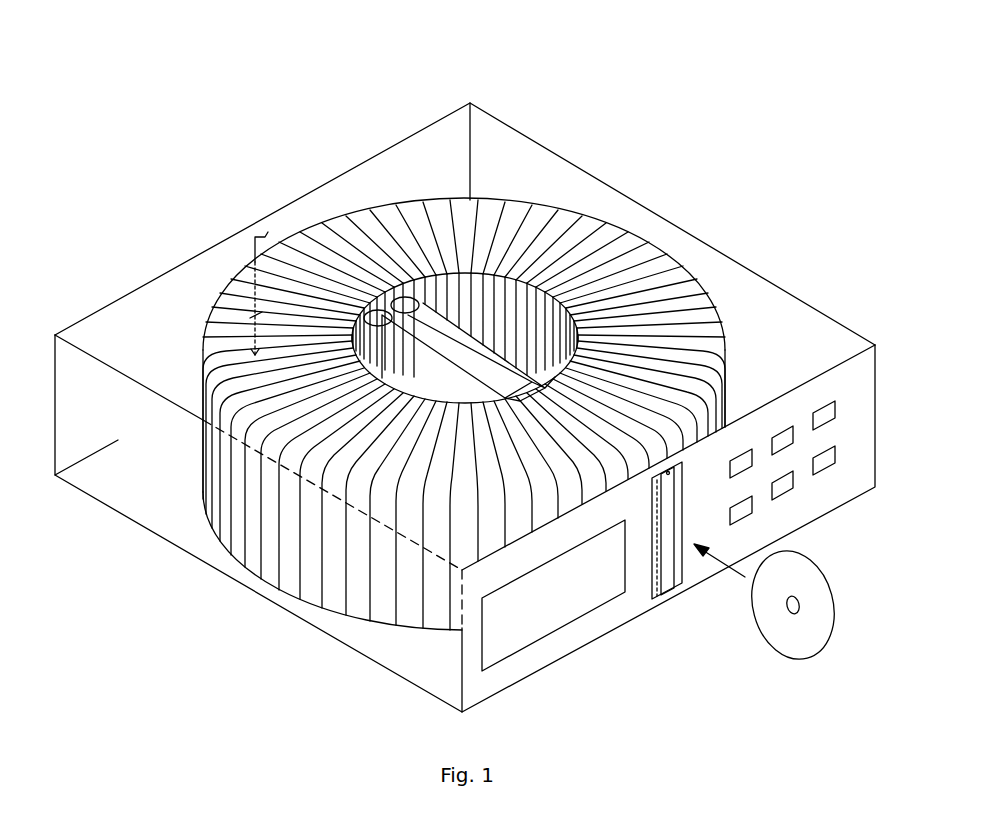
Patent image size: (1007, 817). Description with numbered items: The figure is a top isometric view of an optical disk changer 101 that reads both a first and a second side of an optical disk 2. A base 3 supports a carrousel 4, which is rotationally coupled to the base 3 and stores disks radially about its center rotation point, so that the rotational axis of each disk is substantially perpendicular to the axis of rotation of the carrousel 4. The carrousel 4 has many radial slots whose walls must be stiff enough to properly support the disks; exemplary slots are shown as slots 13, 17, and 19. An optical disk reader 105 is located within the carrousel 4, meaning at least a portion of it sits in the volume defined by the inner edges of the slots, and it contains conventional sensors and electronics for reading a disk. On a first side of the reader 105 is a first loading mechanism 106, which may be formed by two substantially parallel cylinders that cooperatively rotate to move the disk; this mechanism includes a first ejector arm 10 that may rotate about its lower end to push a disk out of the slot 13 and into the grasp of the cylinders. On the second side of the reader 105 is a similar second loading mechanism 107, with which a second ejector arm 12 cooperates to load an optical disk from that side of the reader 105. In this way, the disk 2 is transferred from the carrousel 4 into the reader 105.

The optical disk changer 101 is at (513, 113).
The base 3 is at (203, 537).
The carrousel 4 is at (560, 248).
The slot 13 is at (628, 427).
The first loading mechanism 106 is at (635, 300).
The slot 17 is at (310, 257).
The optical disk reader 105 is at (455, 347).
The second loading mechanism 107 is at (388, 297).
The second ejector arm 12 is at (253, 237).
The slot 19 is at (258, 318).
The first ejector arm 10 is at (660, 543).
The optical disk 2 is at (810, 635).